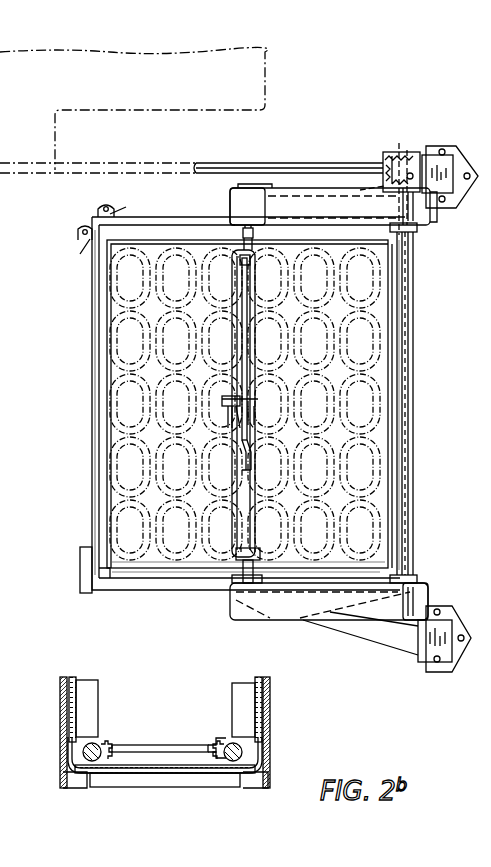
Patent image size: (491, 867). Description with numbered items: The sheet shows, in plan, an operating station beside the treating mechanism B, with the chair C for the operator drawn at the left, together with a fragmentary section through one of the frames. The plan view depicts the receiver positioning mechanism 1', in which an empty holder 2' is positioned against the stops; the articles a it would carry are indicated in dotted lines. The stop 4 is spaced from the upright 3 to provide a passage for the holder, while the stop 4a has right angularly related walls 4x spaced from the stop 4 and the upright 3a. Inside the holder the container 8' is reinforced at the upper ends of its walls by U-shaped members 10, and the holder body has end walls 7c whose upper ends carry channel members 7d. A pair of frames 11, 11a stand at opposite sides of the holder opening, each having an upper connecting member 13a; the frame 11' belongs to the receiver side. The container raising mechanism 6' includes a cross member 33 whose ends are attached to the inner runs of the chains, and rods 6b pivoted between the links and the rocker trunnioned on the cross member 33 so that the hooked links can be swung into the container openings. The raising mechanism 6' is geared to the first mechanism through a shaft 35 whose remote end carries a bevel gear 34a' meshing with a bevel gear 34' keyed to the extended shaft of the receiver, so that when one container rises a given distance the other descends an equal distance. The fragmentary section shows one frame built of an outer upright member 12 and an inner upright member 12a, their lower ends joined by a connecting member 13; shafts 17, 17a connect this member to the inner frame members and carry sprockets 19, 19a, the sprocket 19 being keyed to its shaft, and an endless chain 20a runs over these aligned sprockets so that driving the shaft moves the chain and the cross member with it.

In FIG. 1, the treating mechanism B is at (300, 95).
In FIG. 1, the chair C is at (2, 446).
In FIG. 1, the positioning mechanism 1' is at (243, 416).
In FIG. 1, the holder 2' is at (76, 402).
In FIG. 1, the stop 4 is at (88, 575).
In FIG. 1, the stop 4a is at (98, 212).
In FIG. 1, the right angularly related walls 4x is at (118, 214).
In FIG. 1, the container 8' is at (274, 404).
In FIG. 1, the articles a is at (126, 404).
In FIG. 1, the container raising mechanism 6' is at (397, 434).
In FIG. 1, the frame 11' is at (427, 405).
In FIG. 1, the frame 11a is at (300, 215).
In FIG. 1, the connecting member 13a is at (296, 190).
In FIG. 1, the shaft 35 is at (334, 172).
In FIG. 1, the bevel gear 34' is at (407, 178).
In FIG. 1, the upright 3a is at (440, 200).
In FIG. 1, the bevel gear 34a' is at (375, 203).
In FIG. 1, the cross member 33 is at (256, 358).
In FIG. 1, the rods 6b is at (252, 330).
In FIG. 1, the end walls 7c is at (226, 428).
In FIG. 1, the frame 11 is at (329, 610).
In FIG. 1, the U-shaped members 10 is at (147, 568).
In FIG. 1, the channel members 7d is at (172, 588).
In FIG. 1, the upright 3 is at (447, 618).
In FIG. 2b, the endless chain 20a is at (262, 680).
In FIG. 2b, the inner upright member 12a is at (98, 684).
In FIG. 2b, the outer upright member 12 is at (232, 698).
In FIG. 2b, the connecting member 13 is at (132, 785).
In FIG. 2b, the shaft 17a is at (112, 742).
In FIG. 2b, the shaft 17 is at (216, 746).
In FIG. 2b, the sprocket 19a is at (104, 758).
In FIG. 2b, the sprocket 19 is at (216, 760).